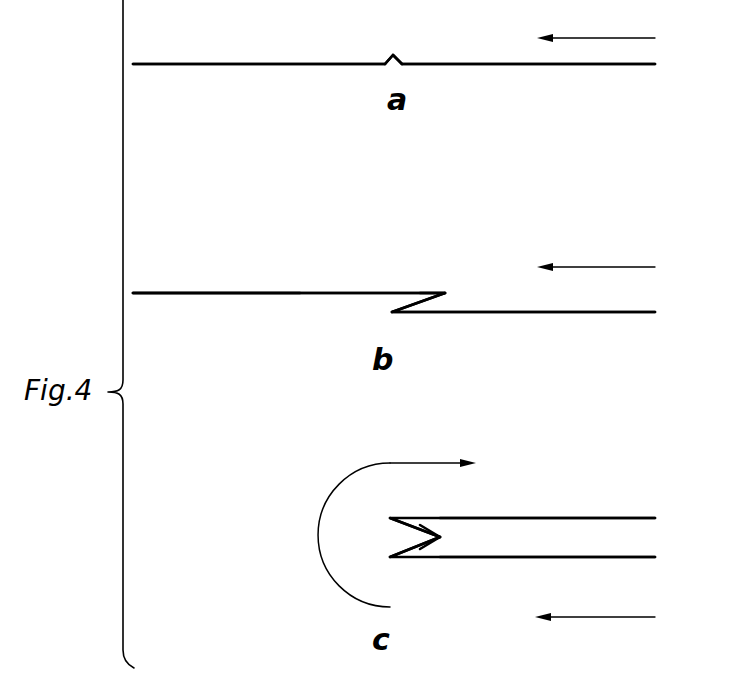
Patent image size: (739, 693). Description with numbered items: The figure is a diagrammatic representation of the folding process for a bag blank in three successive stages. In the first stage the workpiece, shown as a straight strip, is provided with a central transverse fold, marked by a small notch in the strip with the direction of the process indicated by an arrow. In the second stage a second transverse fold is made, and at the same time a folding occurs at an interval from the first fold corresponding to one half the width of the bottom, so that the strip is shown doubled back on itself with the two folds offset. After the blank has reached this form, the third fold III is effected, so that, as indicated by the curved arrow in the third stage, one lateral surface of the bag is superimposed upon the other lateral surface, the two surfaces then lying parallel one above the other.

The third fold III is at (398, 522).